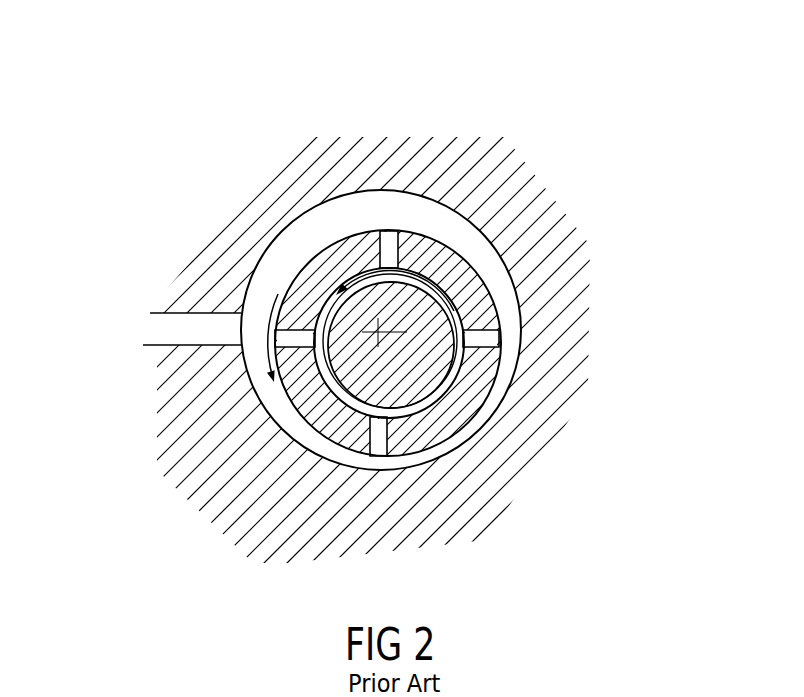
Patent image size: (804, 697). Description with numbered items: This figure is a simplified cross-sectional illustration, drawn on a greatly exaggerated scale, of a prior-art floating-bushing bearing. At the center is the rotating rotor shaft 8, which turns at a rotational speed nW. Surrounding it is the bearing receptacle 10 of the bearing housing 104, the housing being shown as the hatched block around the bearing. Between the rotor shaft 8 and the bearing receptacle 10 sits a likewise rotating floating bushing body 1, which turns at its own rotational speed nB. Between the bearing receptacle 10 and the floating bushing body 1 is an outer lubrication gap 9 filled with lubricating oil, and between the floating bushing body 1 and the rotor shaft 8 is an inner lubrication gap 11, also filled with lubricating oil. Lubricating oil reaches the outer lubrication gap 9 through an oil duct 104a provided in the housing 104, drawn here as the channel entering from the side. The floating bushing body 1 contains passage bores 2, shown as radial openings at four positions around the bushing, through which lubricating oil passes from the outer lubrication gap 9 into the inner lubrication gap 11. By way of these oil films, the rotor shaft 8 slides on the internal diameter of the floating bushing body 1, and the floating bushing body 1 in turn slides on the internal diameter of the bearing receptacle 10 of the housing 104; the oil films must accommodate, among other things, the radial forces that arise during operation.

The floating bushing body 1 is at (449, 258).
The passage bores 2 is at (358, 234).
The rotor shaft 8 is at (424, 322).
The outer lubrication gap 9 is at (447, 220).
The bearing receptacle 10 is at (526, 340).
The inner lubrication gap 11 is at (322, 318).
The bearing housing 104 is at (492, 480).
The oil duct 104a is at (180, 333).
The rotational speed of the rotor shaft nW is at (388, 234).
The rotational speed of the floating bushing body nB is at (277, 313).